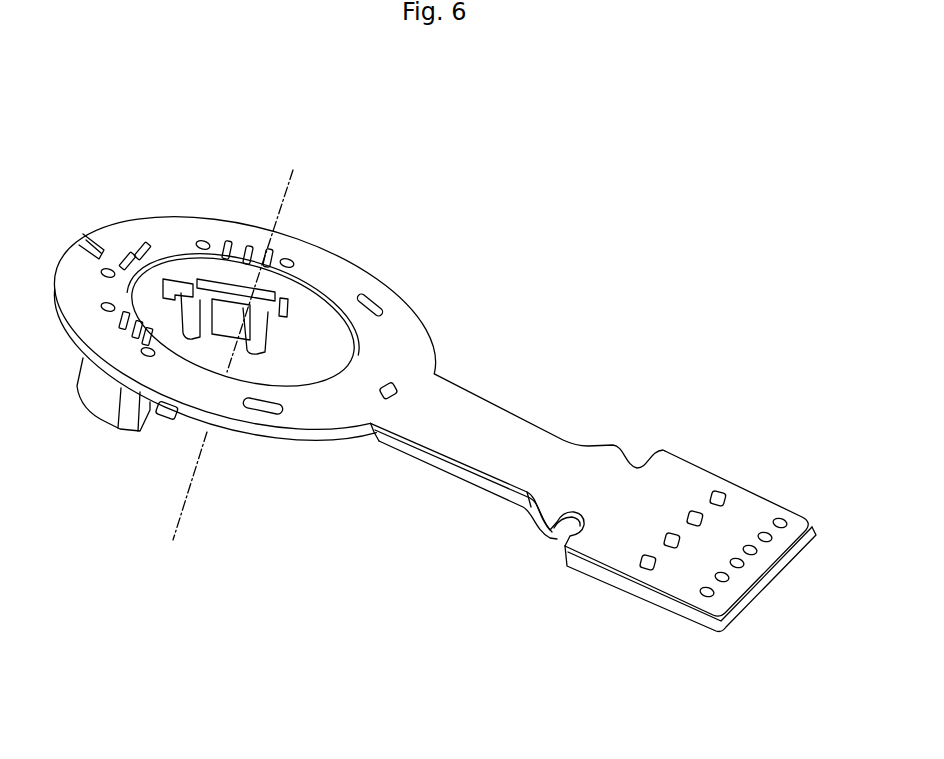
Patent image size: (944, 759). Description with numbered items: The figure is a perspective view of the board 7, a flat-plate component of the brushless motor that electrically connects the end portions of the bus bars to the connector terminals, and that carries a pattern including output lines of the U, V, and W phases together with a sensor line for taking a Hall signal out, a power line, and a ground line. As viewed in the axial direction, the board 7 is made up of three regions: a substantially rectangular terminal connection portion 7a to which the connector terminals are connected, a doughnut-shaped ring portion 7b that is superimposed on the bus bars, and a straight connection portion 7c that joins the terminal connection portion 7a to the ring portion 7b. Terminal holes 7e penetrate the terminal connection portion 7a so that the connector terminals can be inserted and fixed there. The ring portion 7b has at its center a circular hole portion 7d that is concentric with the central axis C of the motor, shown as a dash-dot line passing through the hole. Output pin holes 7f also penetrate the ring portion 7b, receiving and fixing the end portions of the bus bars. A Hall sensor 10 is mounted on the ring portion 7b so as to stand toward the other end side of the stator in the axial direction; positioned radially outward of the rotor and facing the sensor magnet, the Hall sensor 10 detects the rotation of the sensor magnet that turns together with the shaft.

The board 7 is at (798, 310).
The terminal connection portion 7a is at (663, 585).
The ring portion 7b is at (221, 229).
The connection portion 7c is at (487, 460).
The circular hole portion 7d is at (306, 293).
The terminal holes 7e is at (721, 491).
The output pin holes 7f is at (381, 300).
The Hall sensor 10 is at (138, 296).
The central axis C is at (237, 343).